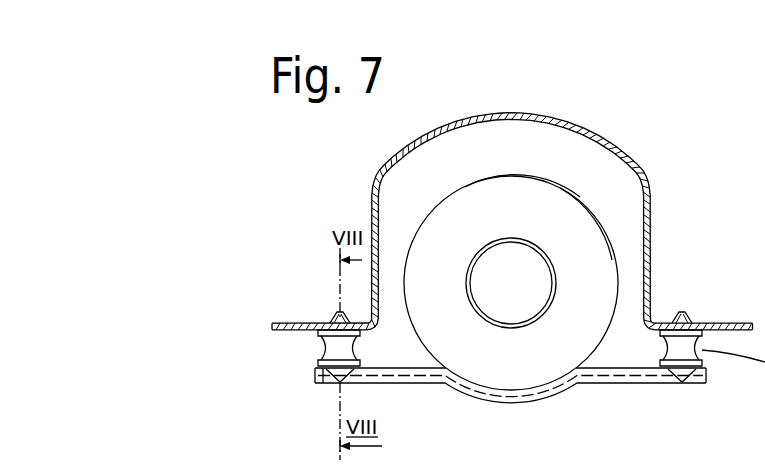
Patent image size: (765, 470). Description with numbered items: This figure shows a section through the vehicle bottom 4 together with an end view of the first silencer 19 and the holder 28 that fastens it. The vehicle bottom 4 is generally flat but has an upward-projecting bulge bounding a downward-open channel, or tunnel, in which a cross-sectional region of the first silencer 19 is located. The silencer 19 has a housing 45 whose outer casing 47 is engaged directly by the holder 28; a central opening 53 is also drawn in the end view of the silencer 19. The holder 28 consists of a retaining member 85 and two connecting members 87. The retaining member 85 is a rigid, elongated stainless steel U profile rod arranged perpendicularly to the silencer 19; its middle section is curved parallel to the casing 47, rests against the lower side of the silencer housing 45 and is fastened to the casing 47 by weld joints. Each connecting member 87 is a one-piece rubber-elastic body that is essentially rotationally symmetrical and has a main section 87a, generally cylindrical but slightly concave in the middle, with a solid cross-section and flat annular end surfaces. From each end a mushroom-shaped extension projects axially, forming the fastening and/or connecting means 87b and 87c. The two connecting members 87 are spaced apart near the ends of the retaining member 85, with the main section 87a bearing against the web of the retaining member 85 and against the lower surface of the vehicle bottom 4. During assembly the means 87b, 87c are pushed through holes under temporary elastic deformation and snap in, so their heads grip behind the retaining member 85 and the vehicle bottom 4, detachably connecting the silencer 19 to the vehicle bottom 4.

The vehicle bottom 4 is at (282, 325).
The first silencer 19 is at (462, 180).
The silencer housing 45 is at (525, 170).
The casing 47 is at (579, 197).
The bore 53 is at (553, 268).
The retaining member 85 is at (402, 384).
The holder 28 is at (303, 379).
The connecting member 87 is at (322, 345).
The main section 87a is at (320, 355).
The fastening and/or connecting means 87b is at (330, 384).
The fastening and/or connecting means 87c is at (334, 316).